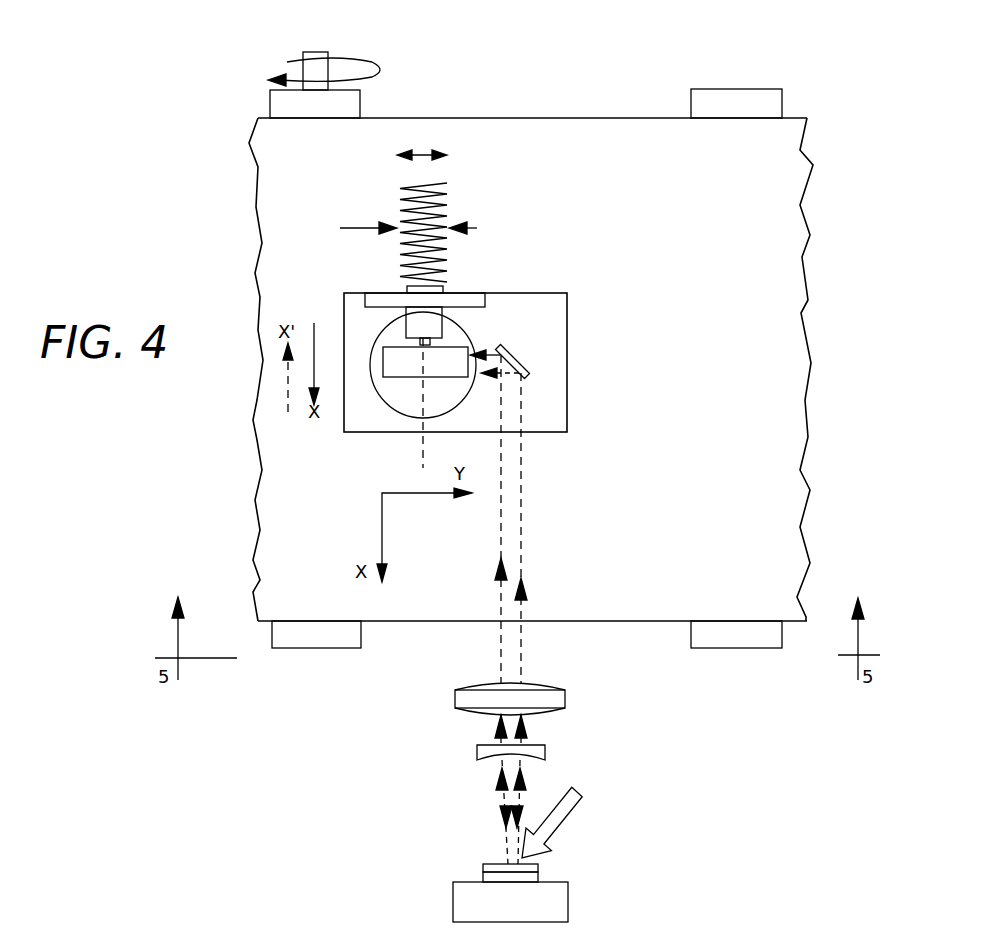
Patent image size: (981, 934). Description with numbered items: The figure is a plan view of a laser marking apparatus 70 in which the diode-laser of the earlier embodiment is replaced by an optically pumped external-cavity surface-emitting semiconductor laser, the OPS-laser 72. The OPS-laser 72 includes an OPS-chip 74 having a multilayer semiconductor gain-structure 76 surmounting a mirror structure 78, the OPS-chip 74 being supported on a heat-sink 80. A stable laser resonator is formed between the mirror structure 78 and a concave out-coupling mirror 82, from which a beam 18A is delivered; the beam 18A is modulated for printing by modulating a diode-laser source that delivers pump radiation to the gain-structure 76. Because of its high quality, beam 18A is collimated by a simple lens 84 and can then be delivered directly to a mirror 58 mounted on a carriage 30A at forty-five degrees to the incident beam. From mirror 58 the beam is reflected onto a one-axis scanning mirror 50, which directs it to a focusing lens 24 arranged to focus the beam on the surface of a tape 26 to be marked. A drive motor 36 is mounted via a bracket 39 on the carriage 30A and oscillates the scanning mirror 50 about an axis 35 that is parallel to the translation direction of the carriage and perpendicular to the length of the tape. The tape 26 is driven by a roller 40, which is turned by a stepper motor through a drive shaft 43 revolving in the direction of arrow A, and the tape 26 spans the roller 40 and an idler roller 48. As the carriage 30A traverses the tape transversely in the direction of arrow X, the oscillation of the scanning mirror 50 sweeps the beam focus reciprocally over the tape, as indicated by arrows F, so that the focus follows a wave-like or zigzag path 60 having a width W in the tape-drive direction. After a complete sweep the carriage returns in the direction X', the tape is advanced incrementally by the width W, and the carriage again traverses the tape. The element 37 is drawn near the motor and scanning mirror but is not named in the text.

The laser marking apparatus 70 is at (165, 107).
The tape 26 is at (741, 366).
The roller 40 is at (275, 103).
The idler roller 48 is at (766, 97).
The drive shaft 43 is at (315, 60).
The zigzag path 60 is at (378, 202).
The bracket 39 is at (383, 297).
The drive motor 36 is at (413, 323).
The post 37 is at (425, 343).
The carriage 30A is at (585, 403).
The lens 24 is at (418, 407).
The scanning mirror 50 is at (408, 372).
The axis 35 is at (420, 448).
The mirror 58 is at (513, 343).
The beam 18A is at (544, 641).
The lens 84 is at (458, 700).
The concave out-coupling mirror 82 is at (475, 745).
The OPS-laser 72 is at (519, 841).
The OPS-chip 74 is at (510, 860).
The gain-structure 76 is at (495, 866).
The mirror structure 78 is at (485, 876).
The heat-sink 80 is at (556, 908).